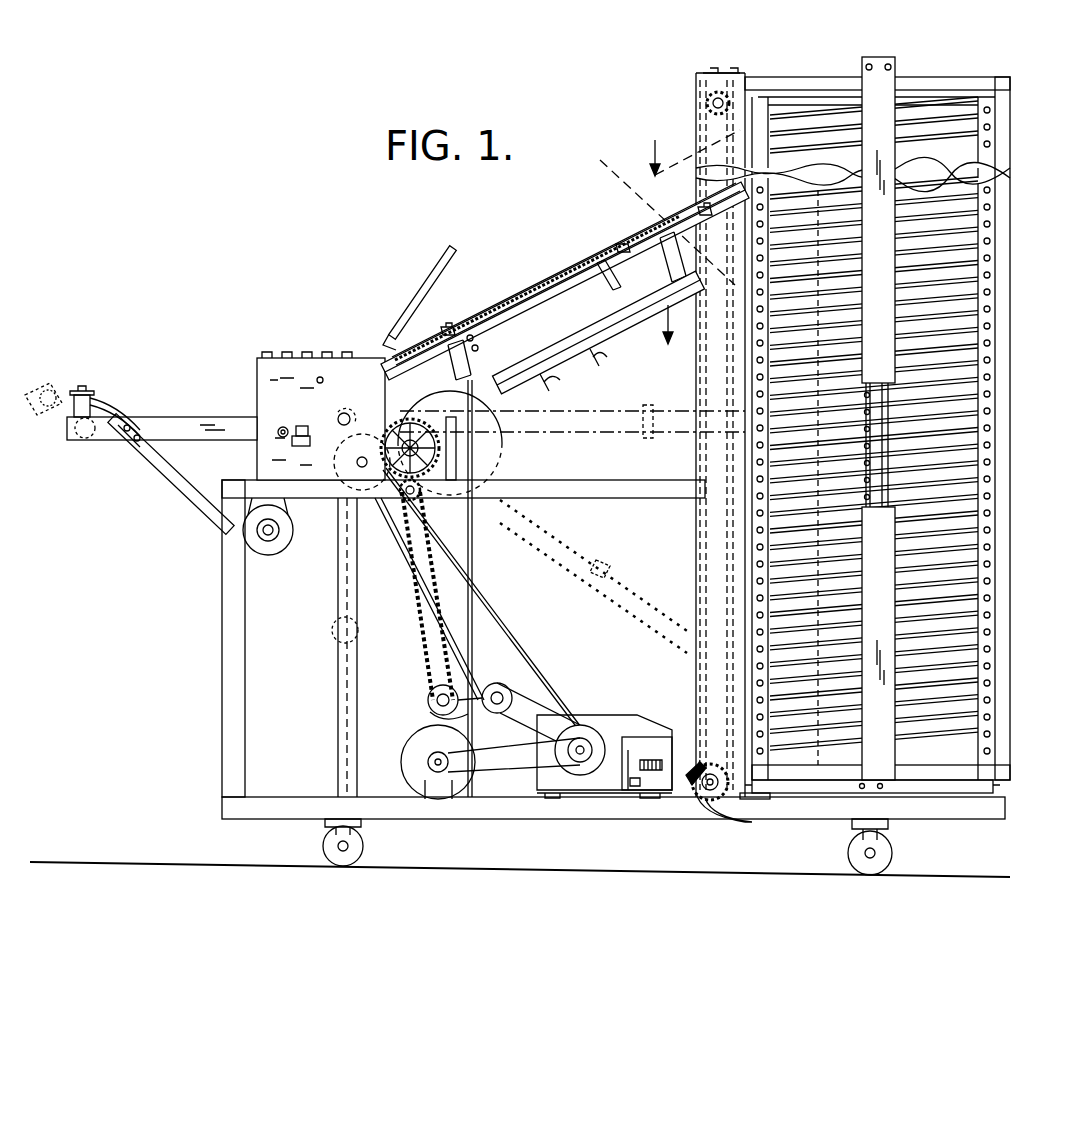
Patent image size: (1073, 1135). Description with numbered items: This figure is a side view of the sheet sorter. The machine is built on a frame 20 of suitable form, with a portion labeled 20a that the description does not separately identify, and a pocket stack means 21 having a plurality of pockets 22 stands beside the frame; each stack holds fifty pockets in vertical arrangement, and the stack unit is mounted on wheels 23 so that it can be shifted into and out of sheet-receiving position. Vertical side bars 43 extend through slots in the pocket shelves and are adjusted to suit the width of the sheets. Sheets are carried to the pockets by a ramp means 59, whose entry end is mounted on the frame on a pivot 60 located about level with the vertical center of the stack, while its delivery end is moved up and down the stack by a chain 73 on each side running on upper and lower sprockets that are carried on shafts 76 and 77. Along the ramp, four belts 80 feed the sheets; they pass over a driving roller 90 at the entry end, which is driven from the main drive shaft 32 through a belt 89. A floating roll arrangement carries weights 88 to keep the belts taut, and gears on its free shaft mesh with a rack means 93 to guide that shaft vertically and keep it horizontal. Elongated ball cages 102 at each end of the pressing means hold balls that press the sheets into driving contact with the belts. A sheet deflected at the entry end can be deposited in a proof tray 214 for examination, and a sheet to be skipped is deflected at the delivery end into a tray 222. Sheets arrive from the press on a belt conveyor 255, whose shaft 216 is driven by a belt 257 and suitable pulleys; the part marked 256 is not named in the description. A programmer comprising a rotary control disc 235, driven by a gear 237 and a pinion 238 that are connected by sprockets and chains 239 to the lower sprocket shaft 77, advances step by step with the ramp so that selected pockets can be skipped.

The frame 20 is at (700, 80).
The control box 20a is at (322, 360).
The pocket stack means 21 is at (1010, 347).
The pocket 22 is at (985, 286).
The wheels 23 is at (760, 800).
The main drive shaft 32 is at (588, 726).
The vertical side bars 43 is at (822, 136).
The ramp means 59 is at (542, 287).
The pivot 60 is at (381, 454).
The chain 73 is at (728, 672).
The shaft 76 is at (710, 104).
The shaft 77 is at (697, 800).
The belts 80 is at (554, 346).
The weights 88 is at (332, 631).
The belt 89 is at (512, 660).
The driving roller 90 is at (350, 462).
The rack means 93 is at (342, 688).
The elongated ball cage 102 is at (478, 337).
The proof tray 214 is at (422, 293).
The shaft 216 is at (282, 428).
The tray 222 is at (596, 329).
The rotary control disc 235 is at (494, 438).
The gear 237 is at (478, 396).
The pinion 238 is at (490, 462).
The sprockets and chains 239 is at (396, 520).
The belt conveyor 255 is at (170, 418).
The brace 256 is at (246, 560).
The belt 257 is at (288, 507).